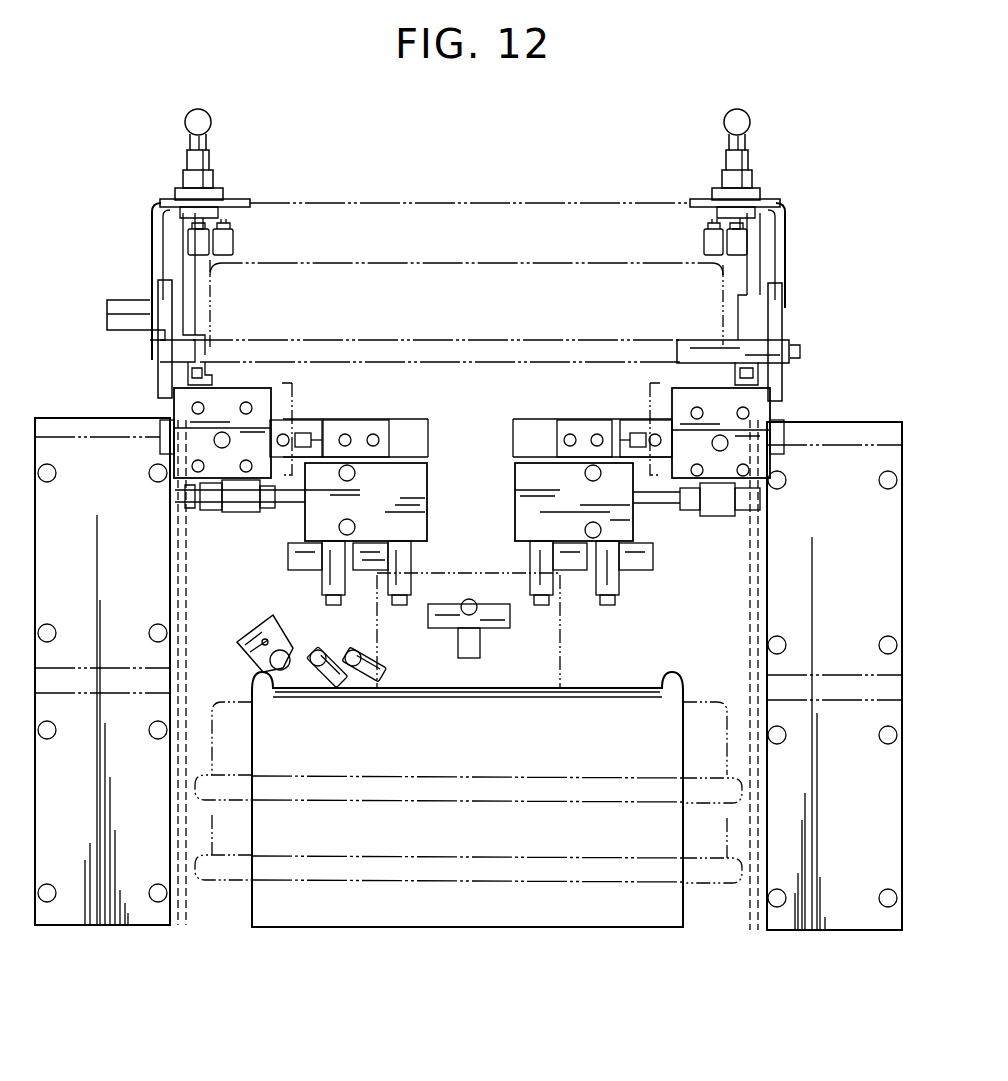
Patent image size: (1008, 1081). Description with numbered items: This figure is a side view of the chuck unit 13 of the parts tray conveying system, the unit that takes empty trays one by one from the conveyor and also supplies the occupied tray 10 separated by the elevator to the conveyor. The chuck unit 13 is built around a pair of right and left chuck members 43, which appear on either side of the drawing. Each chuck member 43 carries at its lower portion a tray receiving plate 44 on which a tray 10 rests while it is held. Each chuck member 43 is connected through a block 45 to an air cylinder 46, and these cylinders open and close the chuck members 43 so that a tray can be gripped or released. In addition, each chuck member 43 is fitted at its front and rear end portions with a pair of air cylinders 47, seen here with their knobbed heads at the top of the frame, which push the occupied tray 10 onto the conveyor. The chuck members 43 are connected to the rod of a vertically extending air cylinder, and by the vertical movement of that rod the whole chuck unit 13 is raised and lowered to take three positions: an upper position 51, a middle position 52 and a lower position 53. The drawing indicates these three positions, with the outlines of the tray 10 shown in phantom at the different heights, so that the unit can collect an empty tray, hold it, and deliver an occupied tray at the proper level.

The occupied tray 10 is at (545, 264).
The chuck unit 13 is at (538, 165).
The chuck member 43 is at (165, 297).
The tray receiving plate 44 is at (180, 362).
The block 45 is at (232, 402).
The air cylinder 46 is at (514, 487).
The air cylinder 47 is at (217, 180).
The upper position 51 is at (810, 364).
The middle position 52 is at (788, 784).
The lower position 53 is at (786, 870).